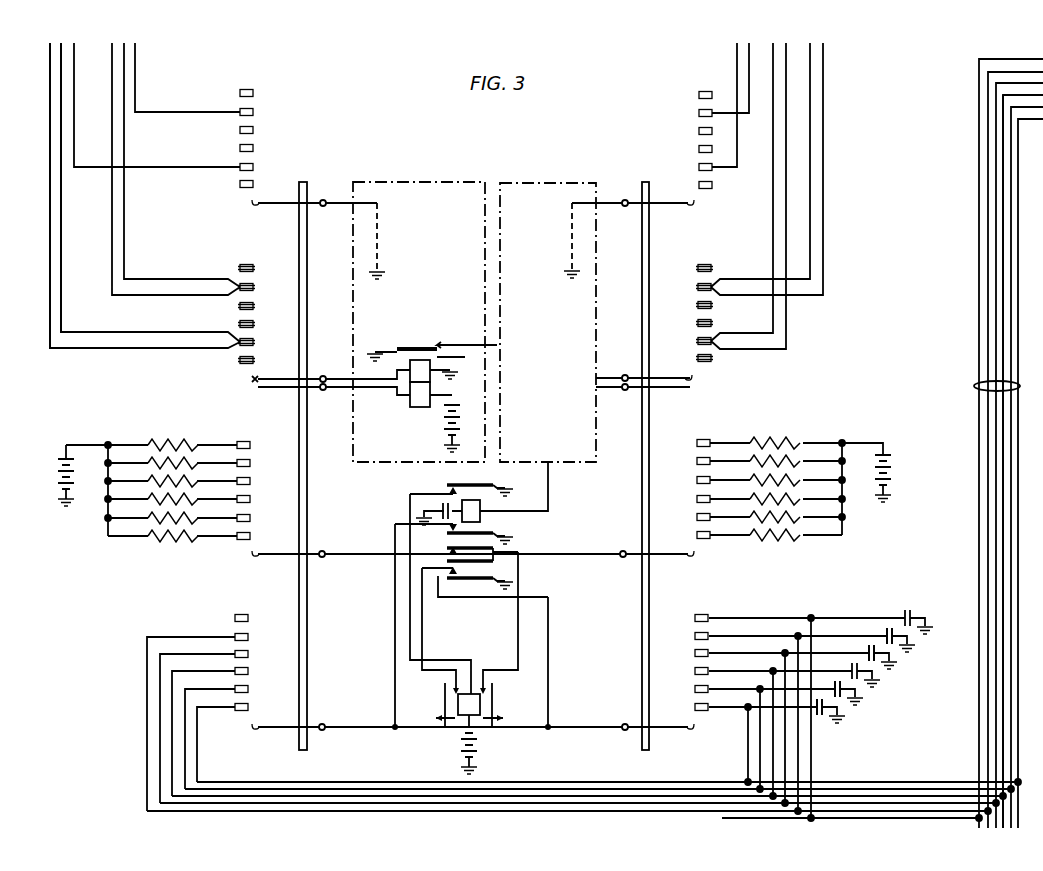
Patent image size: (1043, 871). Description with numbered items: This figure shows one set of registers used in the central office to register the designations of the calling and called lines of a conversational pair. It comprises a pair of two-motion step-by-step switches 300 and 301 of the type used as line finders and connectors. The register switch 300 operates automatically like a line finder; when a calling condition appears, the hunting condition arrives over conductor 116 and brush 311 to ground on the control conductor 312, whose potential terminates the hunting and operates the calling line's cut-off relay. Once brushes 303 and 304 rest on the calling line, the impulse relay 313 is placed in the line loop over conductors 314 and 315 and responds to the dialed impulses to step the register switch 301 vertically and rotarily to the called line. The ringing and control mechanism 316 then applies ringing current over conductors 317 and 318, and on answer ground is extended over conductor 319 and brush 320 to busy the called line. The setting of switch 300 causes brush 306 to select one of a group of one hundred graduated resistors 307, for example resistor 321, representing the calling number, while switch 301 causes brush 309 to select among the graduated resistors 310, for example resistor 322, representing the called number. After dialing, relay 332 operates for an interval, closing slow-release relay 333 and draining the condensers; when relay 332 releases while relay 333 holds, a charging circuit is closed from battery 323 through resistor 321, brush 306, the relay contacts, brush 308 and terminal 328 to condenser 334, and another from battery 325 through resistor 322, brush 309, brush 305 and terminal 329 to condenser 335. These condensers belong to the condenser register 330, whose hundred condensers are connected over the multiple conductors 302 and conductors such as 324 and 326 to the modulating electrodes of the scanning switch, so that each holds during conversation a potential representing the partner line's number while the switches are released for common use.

The conductor 116 is at (183, 165).
The register switch 300 is at (308, 512).
The register switch 301 is at (630, 512).
The multiple conductors 302 is at (976, 385).
The brush 303 is at (277, 377).
The brush 304 is at (277, 388).
The brush 305 is at (280, 731).
The brush 306 is at (280, 558).
The graduated resistors 307 is at (177, 477).
The brush 308 is at (670, 731).
The brush 309 is at (670, 558).
The graduated resistors 310 is at (771, 476).
The brush 311 is at (280, 205).
The control conductor 312 is at (379, 209).
The impulse relay 313 is at (408, 400).
The conductor 314 is at (110, 351).
The conductor 315 is at (137, 335).
The ringing and control mechanism 316 is at (596, 313).
The conductor 317 is at (724, 274).
The conductor 318 is at (732, 300).
The conductor 319 is at (570, 213).
The brush 320 is at (671, 205).
The graduated resistor 321 is at (193, 514).
The graduated resistor 322 is at (797, 460).
The battery 323 is at (58, 482).
The conductor 324 is at (984, 337).
The battery 325 is at (894, 479).
The conductor 326 is at (1006, 404).
The terminal 328 is at (694, 636).
The terminal 329 is at (249, 689).
The condenser register 330 is at (821, 705).
The relay 332 is at (480, 518).
The slow-release relay 333 is at (484, 706).
The condenser 334 is at (896, 650).
The condenser 335 is at (846, 708).